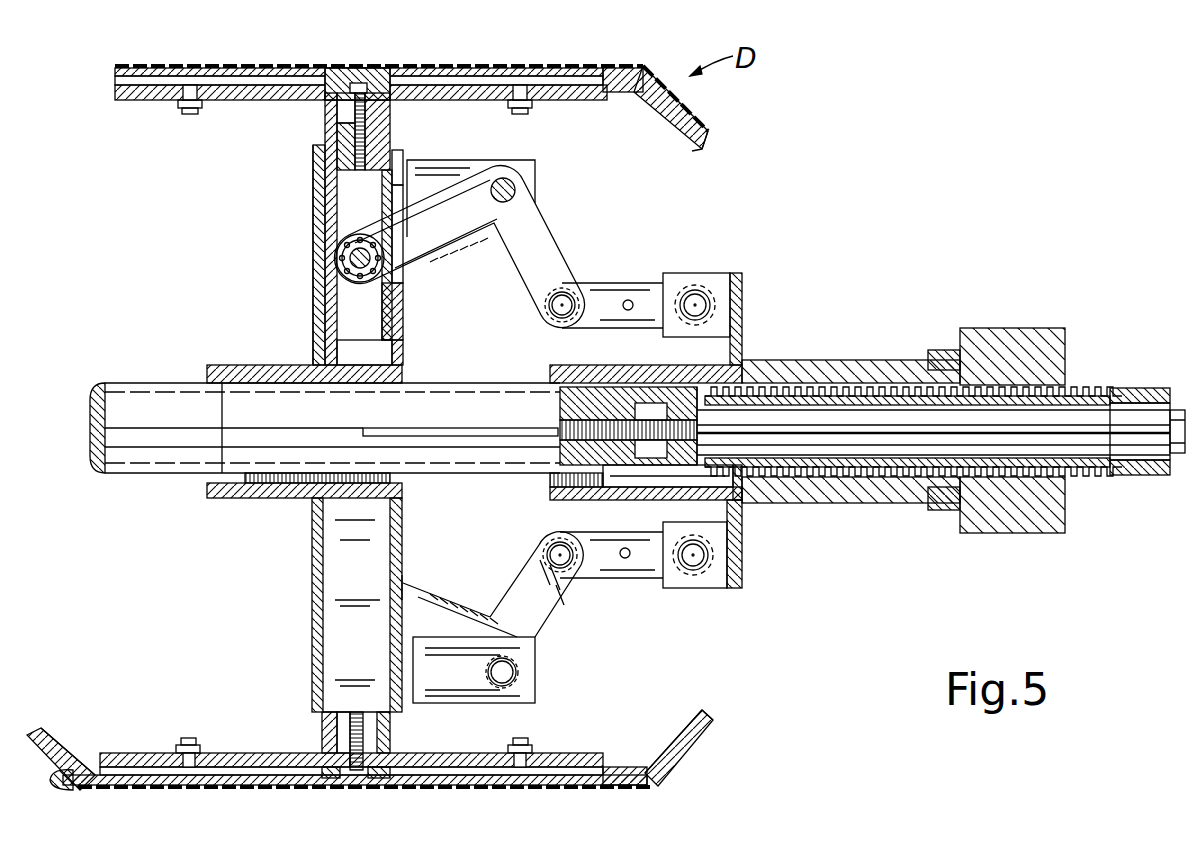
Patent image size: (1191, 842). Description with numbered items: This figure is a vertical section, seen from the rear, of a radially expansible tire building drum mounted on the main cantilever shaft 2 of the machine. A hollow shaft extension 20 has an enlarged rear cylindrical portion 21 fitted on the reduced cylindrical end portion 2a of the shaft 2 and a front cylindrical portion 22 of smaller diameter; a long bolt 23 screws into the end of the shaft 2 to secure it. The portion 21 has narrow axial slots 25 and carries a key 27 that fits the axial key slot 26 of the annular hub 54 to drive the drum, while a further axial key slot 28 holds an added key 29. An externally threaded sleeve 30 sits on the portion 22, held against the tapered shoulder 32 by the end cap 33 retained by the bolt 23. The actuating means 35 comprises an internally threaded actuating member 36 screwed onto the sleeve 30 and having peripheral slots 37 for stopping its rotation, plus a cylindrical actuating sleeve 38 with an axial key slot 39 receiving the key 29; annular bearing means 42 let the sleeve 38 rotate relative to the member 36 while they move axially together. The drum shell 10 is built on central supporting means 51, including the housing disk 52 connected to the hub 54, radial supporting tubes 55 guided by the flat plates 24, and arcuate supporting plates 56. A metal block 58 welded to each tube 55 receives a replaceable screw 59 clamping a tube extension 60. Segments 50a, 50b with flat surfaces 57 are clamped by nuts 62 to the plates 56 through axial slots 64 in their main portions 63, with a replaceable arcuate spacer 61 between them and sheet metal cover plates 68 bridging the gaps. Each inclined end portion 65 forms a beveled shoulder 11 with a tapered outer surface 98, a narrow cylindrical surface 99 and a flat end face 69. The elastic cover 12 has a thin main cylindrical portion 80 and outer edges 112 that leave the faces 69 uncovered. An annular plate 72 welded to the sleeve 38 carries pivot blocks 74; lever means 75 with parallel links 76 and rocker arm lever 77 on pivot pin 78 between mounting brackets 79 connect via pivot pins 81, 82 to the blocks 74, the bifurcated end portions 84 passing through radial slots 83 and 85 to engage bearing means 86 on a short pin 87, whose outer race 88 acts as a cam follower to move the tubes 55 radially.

The main cantilever shaft 2 is at (160, 380).
The reduced cylindrical end portion 2a is at (650, 405).
The expansible cylindrical shell 10 is at (498, 790).
The beveled shoulders 11 is at (687, 102).
The annular cover 12 is at (627, 65).
The hollow shaft extension 20 is at (500, 385).
The enlarged rear cylindrical portion 21 is at (463, 478).
The front cylindrical portion 22 is at (1088, 473).
The long bolt 23 is at (1138, 443).
The flat plates 24 is at (322, 548).
The axial slots 25 is at (438, 428).
The axial key slot 26 is at (213, 487).
The key 27 is at (310, 477).
The axial key slot 28 is at (590, 483).
The key 29 is at (663, 483).
The externally threaded sleeve 30 is at (1082, 387).
The tapered shoulder 32 is at (700, 387).
The end cap 33 is at (1132, 388).
The actuating means 35 is at (805, 357).
The actuating member 36 is at (1050, 533).
The peripheral slots 37 is at (990, 328).
The actuating sleeve 38 is at (607, 363).
The axial key slot 39 is at (633, 483).
The annular bearing means 42 is at (935, 350).
The segment 50a is at (80, 763).
The segment 50b is at (617, 765).
The central supporting means 51 is at (322, 740).
The housing disk 52 is at (407, 160).
The annular hub 54 is at (233, 363).
The radial supporting tubes 55 is at (313, 180).
The supporting plates 56 is at (158, 102).
The flat surfaces 57 is at (313, 148).
The metal block 58 is at (347, 172).
The replaceable screw 59 is at (345, 106).
The tube extension 60 is at (392, 127).
The arcuate spacer 61 is at (387, 70).
The clamping nut 62 is at (190, 737).
The main portion 63 is at (87, 783).
The axial slot 64 is at (277, 87).
The inclined end portion 65 is at (63, 753).
The sheet metal cover plates 68 is at (557, 73).
The flat end face 69 is at (710, 140).
The annular plate 72 is at (742, 522).
The pivot blocks 74 is at (697, 342).
The lever means 75 is at (563, 607).
The parallel links 76 is at (613, 282).
The rocker arm lever 77 is at (453, 247).
The pivot pin 78 is at (513, 183).
The mounting brackets 79 is at (533, 172).
The main cylindrical portion 80 is at (215, 62).
The pivot pin 81 is at (547, 307).
The pivot pin 82 is at (697, 288).
The radial slots 83 is at (403, 290).
The bifurcated end portions 84 is at (313, 222).
The radial slots 85 is at (382, 308).
The cylindrical bearing means 86 is at (382, 230).
The short pin 87 is at (383, 250).
The outer race 88 is at (333, 297).
The tapered outer surface 98 is at (40, 757).
The narrow cylindrical surface 99 is at (703, 150).
The outer edges 112 is at (707, 127).